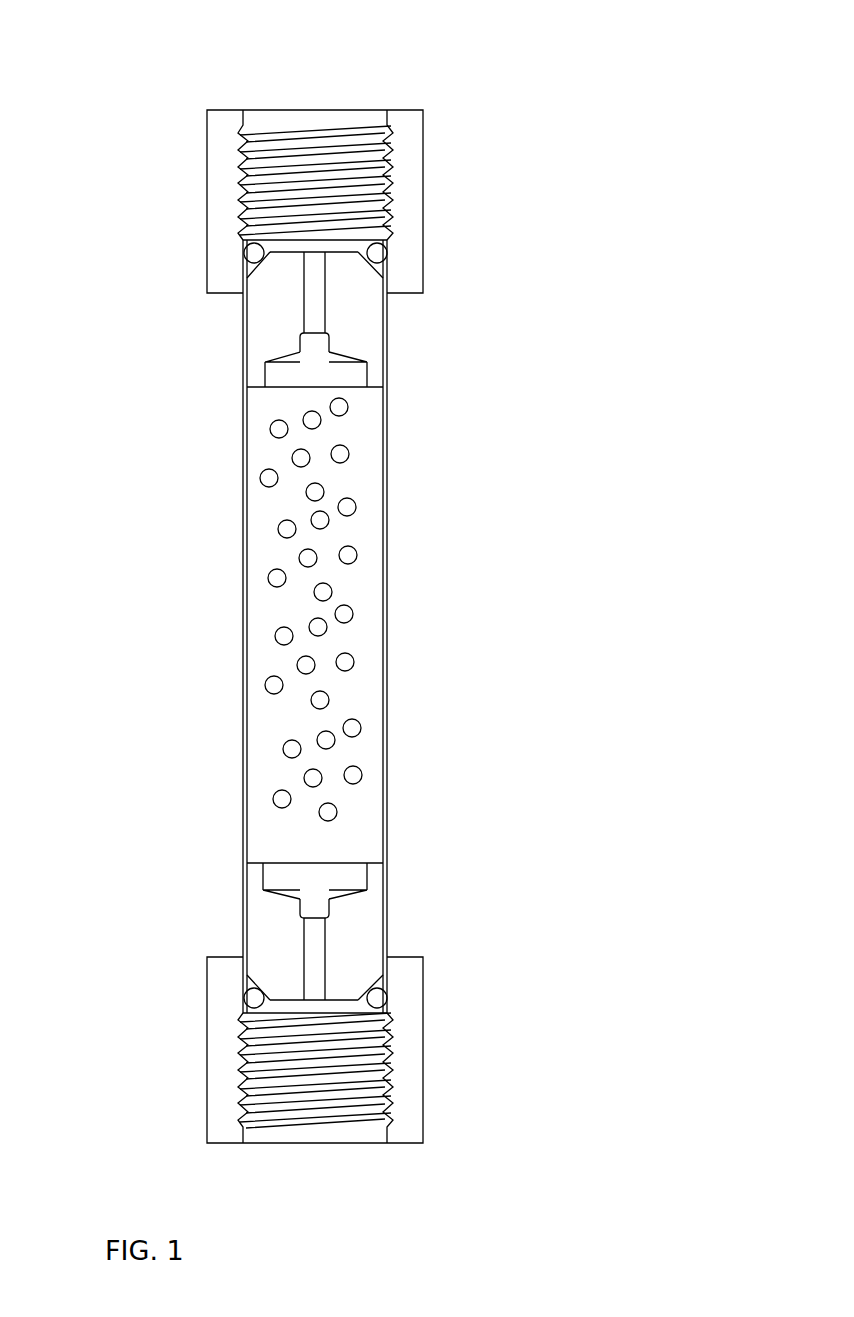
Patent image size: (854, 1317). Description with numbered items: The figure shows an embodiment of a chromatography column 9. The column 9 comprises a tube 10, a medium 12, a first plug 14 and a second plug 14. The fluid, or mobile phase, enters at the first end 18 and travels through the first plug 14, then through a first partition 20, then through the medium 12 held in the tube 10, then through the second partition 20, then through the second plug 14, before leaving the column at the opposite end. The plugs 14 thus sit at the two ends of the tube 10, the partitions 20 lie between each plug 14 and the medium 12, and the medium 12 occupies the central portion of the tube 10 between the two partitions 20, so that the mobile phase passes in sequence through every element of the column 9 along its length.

The chromatography column 9 is at (172, 505).
The tube 10 is at (388, 680).
The medium 12 is at (357, 553).
The plug 14 is at (367, 333).
The first end 18 is at (403, 73).
The partition 20 is at (348, 375).